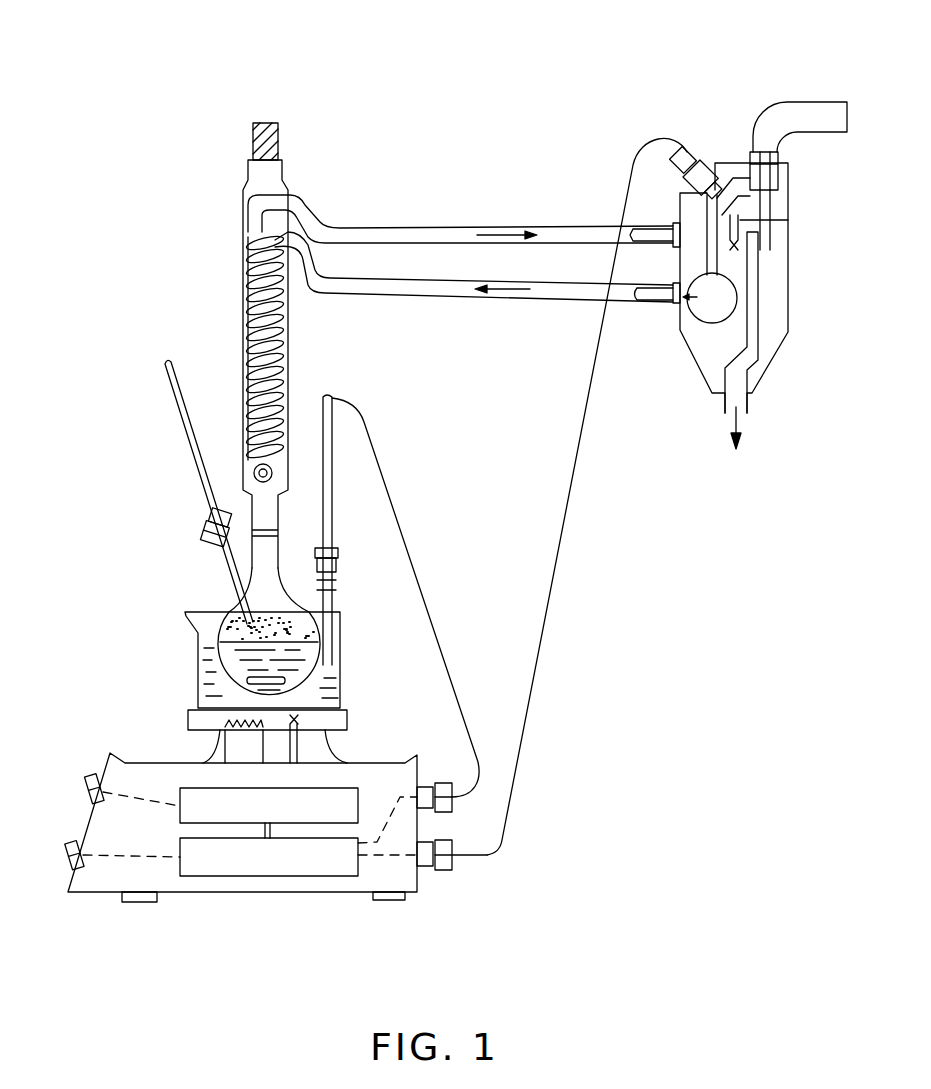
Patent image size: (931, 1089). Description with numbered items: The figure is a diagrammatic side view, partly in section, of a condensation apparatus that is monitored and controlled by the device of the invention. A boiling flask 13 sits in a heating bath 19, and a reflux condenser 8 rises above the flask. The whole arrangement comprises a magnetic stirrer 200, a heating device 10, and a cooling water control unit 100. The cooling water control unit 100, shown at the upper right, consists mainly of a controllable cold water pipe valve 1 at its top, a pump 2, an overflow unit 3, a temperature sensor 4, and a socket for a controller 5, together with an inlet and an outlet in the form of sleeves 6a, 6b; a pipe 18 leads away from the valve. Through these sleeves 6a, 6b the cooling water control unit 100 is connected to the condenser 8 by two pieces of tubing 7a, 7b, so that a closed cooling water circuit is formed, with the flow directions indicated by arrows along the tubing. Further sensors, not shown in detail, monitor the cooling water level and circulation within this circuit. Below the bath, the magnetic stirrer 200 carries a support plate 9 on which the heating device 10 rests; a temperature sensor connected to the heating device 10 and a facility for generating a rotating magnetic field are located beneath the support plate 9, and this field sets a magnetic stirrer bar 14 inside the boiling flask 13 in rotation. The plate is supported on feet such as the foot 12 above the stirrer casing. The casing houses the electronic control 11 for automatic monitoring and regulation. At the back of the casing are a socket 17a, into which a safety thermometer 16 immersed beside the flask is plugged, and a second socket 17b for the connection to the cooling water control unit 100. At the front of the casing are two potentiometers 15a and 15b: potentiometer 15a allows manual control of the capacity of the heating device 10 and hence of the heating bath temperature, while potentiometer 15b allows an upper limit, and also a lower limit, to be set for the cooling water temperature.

The cooling water control unit 100 is at (766, 83).
The outlet pipe 18 is at (820, 103).
The controllable cold water pipe valve 1 is at (787, 177).
The temperature sensor 4 is at (788, 222).
The socket for a controller 5 is at (690, 148).
The overflow unit 3 is at (753, 323).
The pump 2 is at (700, 323).
The piece of tubing 7a is at (408, 287).
The piece of tubing 7b is at (407, 233).
The inlet sleeve 6a is at (650, 224).
The outlet sleeve 6b is at (653, 307).
The reflux condenser 8 is at (240, 300).
The safety thermometer 16 is at (330, 397).
The boiling flask 13 is at (198, 633).
The magnetic stirrer bar 14 is at (285, 681).
The heating bath 19 is at (198, 676).
The support plate 9 is at (187, 714).
The heating device 10 is at (217, 753).
The support foot 12 is at (300, 753).
The magnetic stirrer 200 is at (208, 932).
The control 11 is at (312, 863).
The potentiometer 15a is at (93, 773).
The potentiometer 15b is at (77, 840).
The socket for a safety thermometer 17a is at (430, 782).
The second socket for the cooling water control unit 17b is at (432, 871).